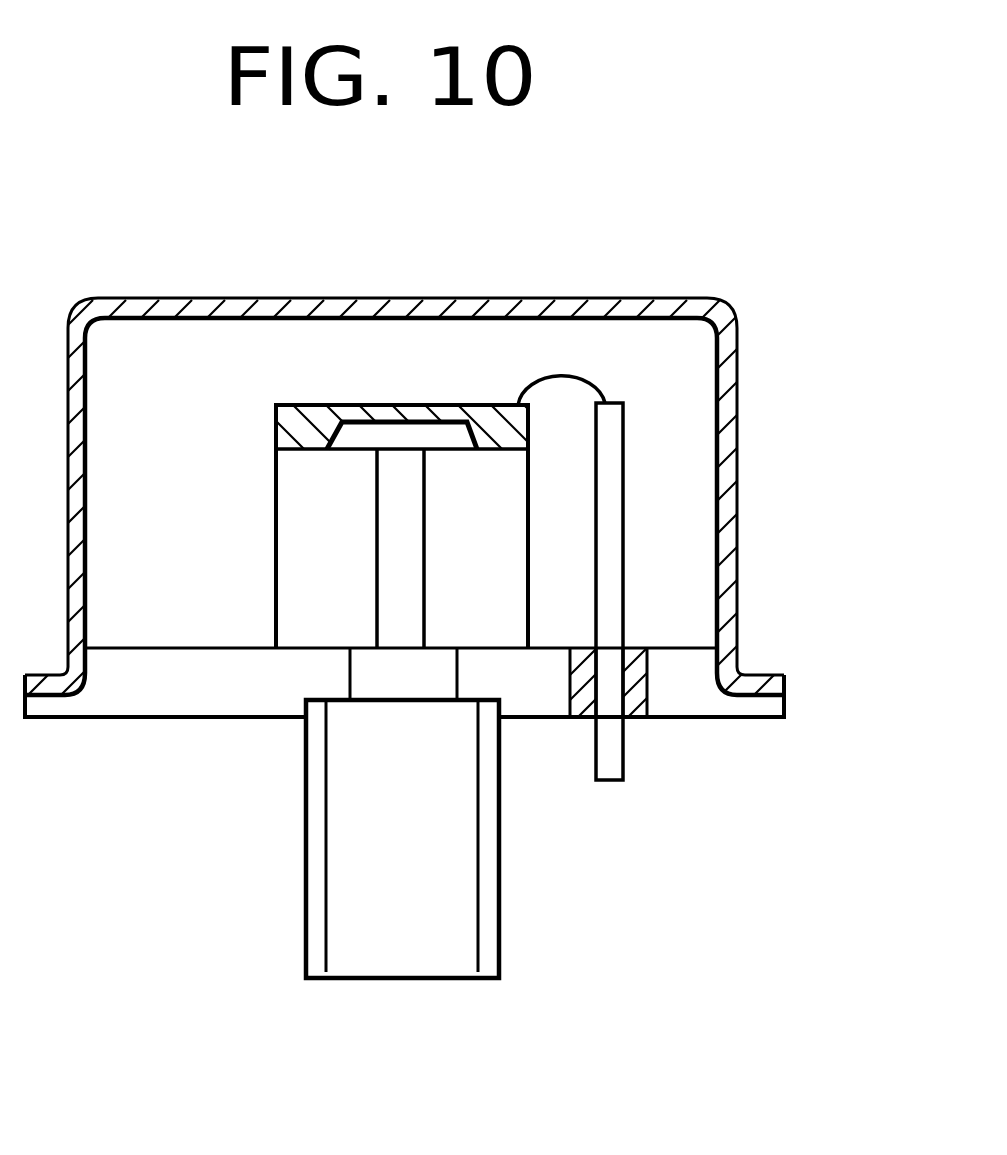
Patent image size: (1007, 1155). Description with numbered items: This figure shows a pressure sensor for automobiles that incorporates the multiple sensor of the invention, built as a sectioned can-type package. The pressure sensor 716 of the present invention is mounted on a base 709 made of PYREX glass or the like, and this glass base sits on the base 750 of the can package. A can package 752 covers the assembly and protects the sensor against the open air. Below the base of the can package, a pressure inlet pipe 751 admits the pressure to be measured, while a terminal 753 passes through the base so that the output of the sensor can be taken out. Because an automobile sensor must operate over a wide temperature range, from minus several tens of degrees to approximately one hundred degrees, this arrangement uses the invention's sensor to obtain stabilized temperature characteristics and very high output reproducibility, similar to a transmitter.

The base 709 is at (282, 573).
The pressure sensor 716 is at (370, 403).
The base of can package 750 is at (165, 708).
The pressure inlet pipe 751 is at (492, 850).
The can package 752 is at (738, 548).
The terminal 753 is at (623, 752).